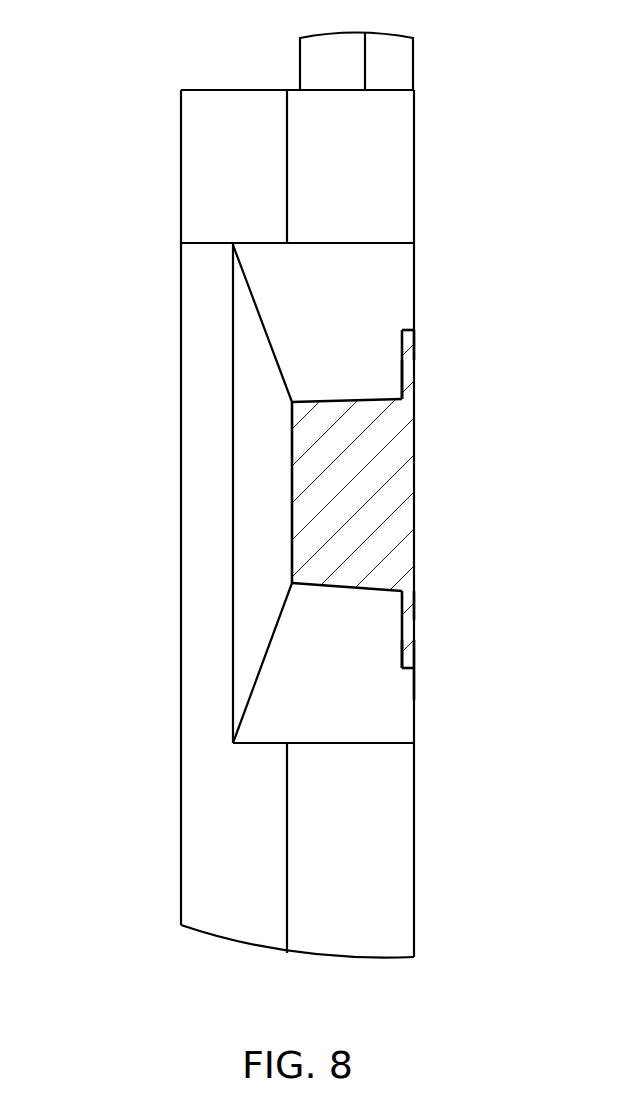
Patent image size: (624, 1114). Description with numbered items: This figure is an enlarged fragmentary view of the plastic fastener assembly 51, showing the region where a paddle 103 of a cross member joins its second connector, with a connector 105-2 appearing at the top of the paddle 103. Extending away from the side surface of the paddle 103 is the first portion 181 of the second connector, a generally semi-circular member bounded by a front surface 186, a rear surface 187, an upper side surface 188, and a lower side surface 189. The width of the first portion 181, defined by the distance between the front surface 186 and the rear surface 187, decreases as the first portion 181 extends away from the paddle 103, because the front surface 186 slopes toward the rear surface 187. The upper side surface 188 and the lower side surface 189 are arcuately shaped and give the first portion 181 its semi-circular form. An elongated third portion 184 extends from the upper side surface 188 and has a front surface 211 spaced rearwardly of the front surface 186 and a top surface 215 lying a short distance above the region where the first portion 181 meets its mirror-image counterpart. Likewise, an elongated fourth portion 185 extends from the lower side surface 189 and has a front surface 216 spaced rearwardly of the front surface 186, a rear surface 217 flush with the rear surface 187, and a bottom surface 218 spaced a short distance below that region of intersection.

The fastening arrangement 51 is at (116, 146).
The connector 105-2 is at (407, 61).
The paddle 103 is at (370, 883).
The first portion 181 is at (227, 418).
The upper side surface 188 is at (307, 291).
The lower side surface 189 is at (298, 726).
The front surface 186 is at (283, 503).
The third portion 184 is at (399, 347).
The fourth portion 185 is at (399, 632).
The top surface 215 is at (404, 329).
The front surface 211 is at (401, 358).
The front surface 216 is at (401, 650).
The rear surface 217 is at (414, 607).
The bottom surface 218 is at (414, 343).
The rear surface 187 is at (414, 697).